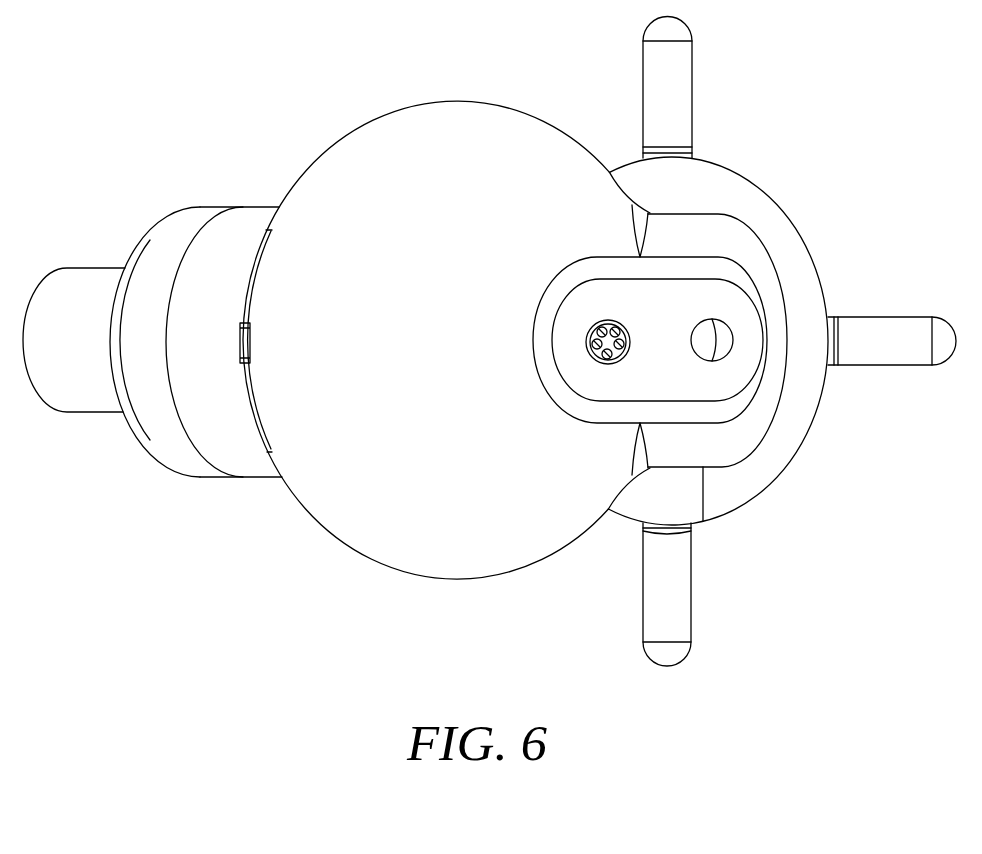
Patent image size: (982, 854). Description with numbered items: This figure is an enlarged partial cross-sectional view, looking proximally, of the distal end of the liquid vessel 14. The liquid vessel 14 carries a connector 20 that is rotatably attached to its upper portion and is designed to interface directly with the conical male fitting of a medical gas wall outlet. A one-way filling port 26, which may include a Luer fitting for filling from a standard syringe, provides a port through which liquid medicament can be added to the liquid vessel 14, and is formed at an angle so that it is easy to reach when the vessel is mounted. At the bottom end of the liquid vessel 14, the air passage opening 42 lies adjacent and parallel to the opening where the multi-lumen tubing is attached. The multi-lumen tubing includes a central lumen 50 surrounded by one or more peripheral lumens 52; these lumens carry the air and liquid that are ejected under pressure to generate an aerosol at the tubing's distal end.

The liquid vessel 14 is at (374, 86).
The connector 20 is at (653, 64).
The one-way filling port 26 is at (87, 278).
The air passage opening 42 is at (709, 338).
The central lumen 50 is at (608, 343).
The peripheral lumens 52 is at (596, 324).